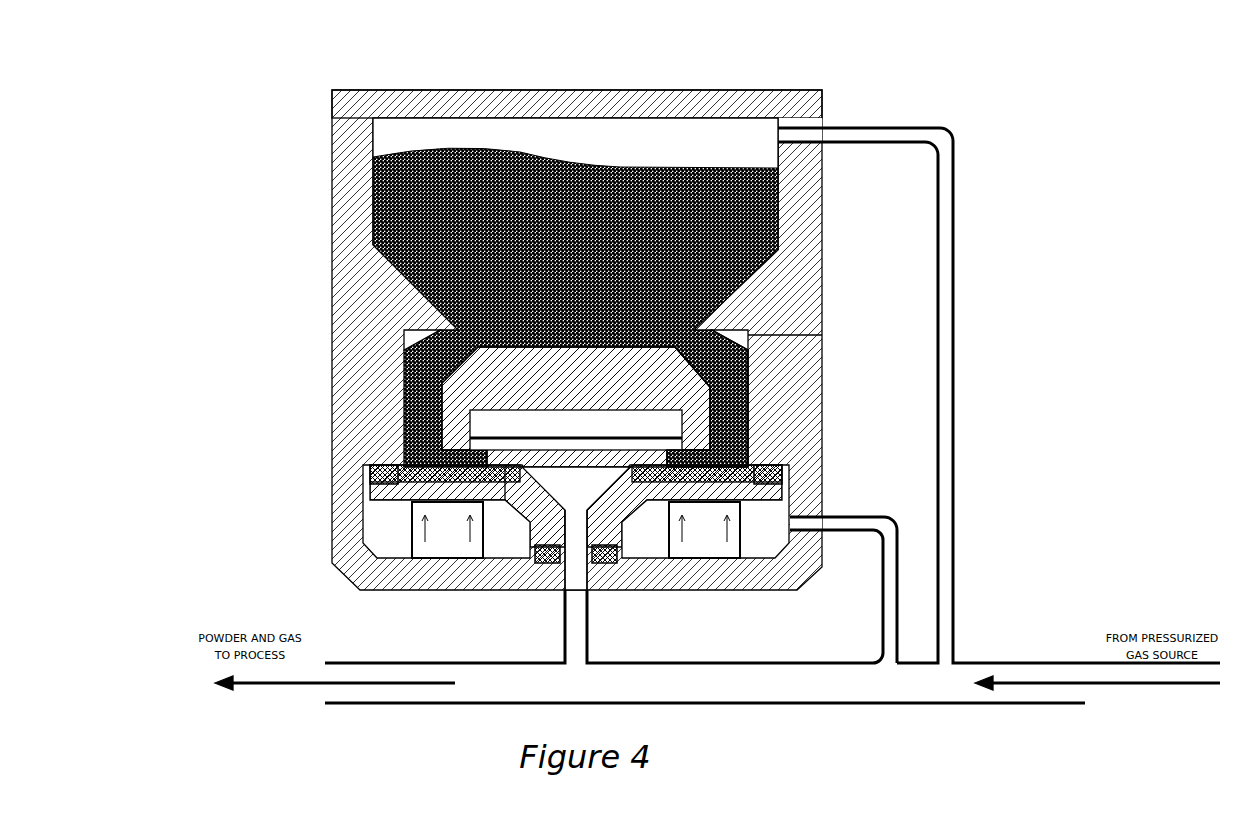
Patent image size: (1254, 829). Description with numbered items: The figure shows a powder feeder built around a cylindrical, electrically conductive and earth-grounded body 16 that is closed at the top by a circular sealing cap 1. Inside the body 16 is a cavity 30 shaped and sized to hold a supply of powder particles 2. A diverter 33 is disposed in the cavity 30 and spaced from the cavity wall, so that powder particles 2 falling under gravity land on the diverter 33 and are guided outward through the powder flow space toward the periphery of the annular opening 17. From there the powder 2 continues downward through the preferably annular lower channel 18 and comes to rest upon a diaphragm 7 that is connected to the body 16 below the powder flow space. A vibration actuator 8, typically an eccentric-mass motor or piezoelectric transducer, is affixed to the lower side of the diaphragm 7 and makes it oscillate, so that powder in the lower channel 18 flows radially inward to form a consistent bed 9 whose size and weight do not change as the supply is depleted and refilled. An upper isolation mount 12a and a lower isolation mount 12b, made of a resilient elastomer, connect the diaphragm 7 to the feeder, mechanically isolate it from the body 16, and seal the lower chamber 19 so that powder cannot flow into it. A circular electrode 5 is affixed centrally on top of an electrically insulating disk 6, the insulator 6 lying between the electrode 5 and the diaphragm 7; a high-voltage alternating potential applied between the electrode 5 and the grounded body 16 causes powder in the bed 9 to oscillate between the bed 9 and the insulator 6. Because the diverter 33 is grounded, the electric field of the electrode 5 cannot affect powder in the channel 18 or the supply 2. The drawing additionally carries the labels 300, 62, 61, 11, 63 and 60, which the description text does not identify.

The cap 1 is at (378, 100).
The powder particles 2 is at (405, 185).
The cavity 30 is at (610, 157).
The powder dispensing apparatus 300 is at (1025, 130).
The upper gas supply pipe 62 is at (898, 135).
The body 16 is at (805, 168).
The annular opening 17 is at (683, 325).
The diverter 33 is at (505, 383).
The electrode 5 is at (620, 435).
The insulator 6 is at (712, 385).
The lower channel 18 is at (737, 428).
The upper isolation mount 12a is at (380, 470).
The lower gas supply pipe 61 is at (850, 520).
The lower chamber 19 is at (372, 525).
The vibration actuator 8 is at (445, 540).
The bed 9 is at (505, 467).
The outlet passage 11 is at (578, 583).
The lower isolation mount 12b is at (605, 560).
The diaphragm 7 is at (763, 493).
The outlet pipe 63 is at (585, 650).
The gas supply manifold 60 is at (708, 680).